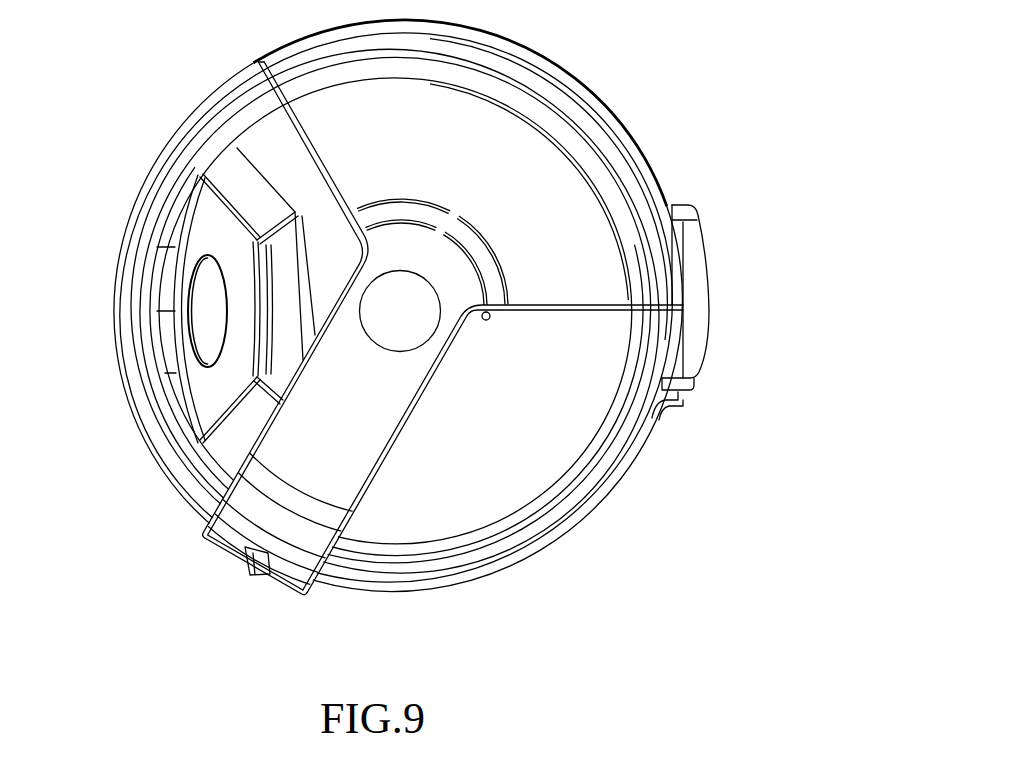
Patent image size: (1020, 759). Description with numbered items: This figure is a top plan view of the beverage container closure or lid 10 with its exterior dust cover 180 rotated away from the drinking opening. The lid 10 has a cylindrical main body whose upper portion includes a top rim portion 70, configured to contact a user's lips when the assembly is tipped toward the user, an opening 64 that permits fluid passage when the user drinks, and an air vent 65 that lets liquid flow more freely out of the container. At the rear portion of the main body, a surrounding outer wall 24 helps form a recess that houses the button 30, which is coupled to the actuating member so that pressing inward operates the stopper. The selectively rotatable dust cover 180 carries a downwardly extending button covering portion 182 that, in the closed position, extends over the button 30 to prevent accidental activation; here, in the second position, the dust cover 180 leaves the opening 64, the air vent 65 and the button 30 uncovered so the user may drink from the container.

The lid 10 is at (699, 112).
The outer wall 24 is at (511, 568).
The button 30 is at (212, 238).
The opening 64 is at (210, 305).
The air vent 65 is at (488, 318).
The top rim portion 70 is at (602, 483).
The dust cover 180 is at (500, 153).
The button covering portion 182 is at (250, 575).